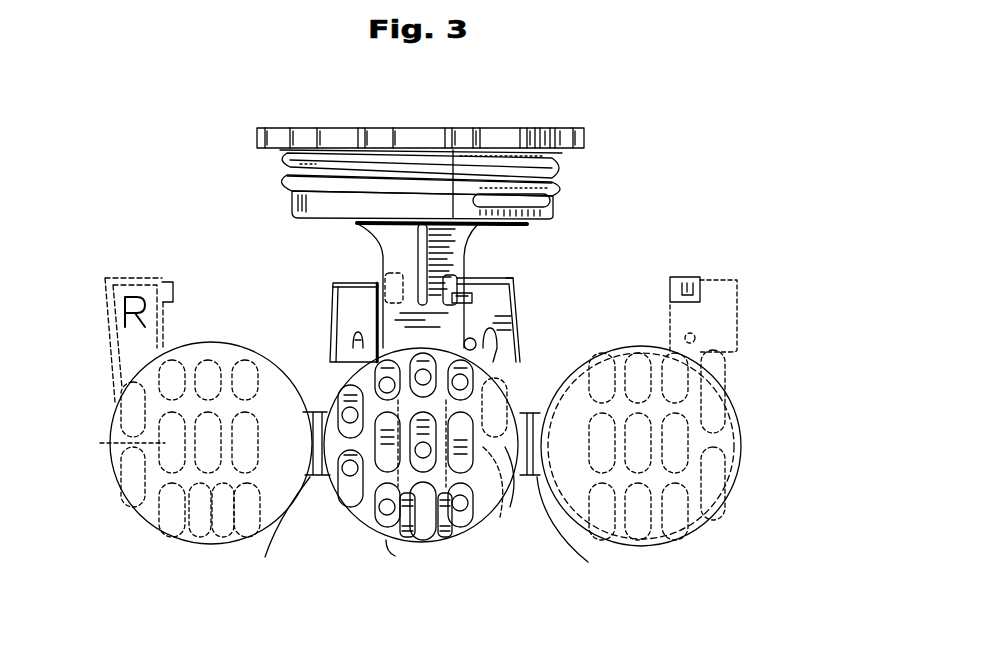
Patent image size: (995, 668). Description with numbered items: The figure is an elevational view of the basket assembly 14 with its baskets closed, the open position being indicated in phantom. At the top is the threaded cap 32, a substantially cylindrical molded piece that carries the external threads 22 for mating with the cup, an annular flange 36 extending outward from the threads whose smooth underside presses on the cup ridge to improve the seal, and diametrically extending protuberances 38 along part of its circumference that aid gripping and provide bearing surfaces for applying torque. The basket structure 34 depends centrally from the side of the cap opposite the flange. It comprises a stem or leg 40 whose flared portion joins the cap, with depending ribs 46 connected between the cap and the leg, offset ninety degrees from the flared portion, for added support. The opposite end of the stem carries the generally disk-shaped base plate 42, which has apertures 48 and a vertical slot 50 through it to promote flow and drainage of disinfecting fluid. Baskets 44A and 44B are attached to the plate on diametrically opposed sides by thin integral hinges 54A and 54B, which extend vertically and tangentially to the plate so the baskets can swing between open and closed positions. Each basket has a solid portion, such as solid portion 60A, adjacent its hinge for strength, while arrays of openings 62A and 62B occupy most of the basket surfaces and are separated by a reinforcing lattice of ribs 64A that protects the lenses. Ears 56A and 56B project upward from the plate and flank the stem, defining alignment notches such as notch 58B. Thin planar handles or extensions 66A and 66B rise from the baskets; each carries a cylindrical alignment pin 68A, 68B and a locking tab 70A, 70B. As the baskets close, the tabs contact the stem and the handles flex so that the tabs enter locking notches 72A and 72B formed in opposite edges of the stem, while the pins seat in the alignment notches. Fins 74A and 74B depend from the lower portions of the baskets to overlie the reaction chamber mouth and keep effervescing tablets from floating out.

The basket assembly 14 is at (637, 173).
The external threads 22 is at (283, 185).
The threaded cap 32 is at (547, 153).
The basket structure 34 is at (546, 295).
The flange 36 is at (432, 138).
The protuberances 38 is at (370, 137).
The stem or leg 40 is at (393, 238).
The base plate 42 is at (352, 505).
The basket 44A is at (495, 548).
The basket 44B is at (152, 515).
The depending ribs 46 is at (392, 240).
The apertures 48 is at (470, 522).
The vertical slot 50 is at (428, 527).
The integral hinge 54A is at (575, 540).
The integral hinge 54B is at (267, 528).
The ear 56A is at (330, 357).
The ear 56B is at (503, 347).
The alignment notch 58B is at (513, 279).
The solid portion 60A is at (500, 519).
The array of openings 62A is at (390, 530).
The array of openings 62B is at (165, 433).
The lattice of ribs 64A is at (317, 477).
The handle or extension 66A is at (331, 323).
The handle or extension 66B is at (524, 330).
The alignment pin 68A is at (740, 352).
The alignment pin 68B is at (527, 330).
The locking tab 70A is at (690, 275).
The locking tab 70B is at (461, 296).
The locking notch 72A is at (385, 276).
The locking notch 72B is at (445, 276).
The fin 74A is at (455, 545).
The fin 74B is at (222, 538).